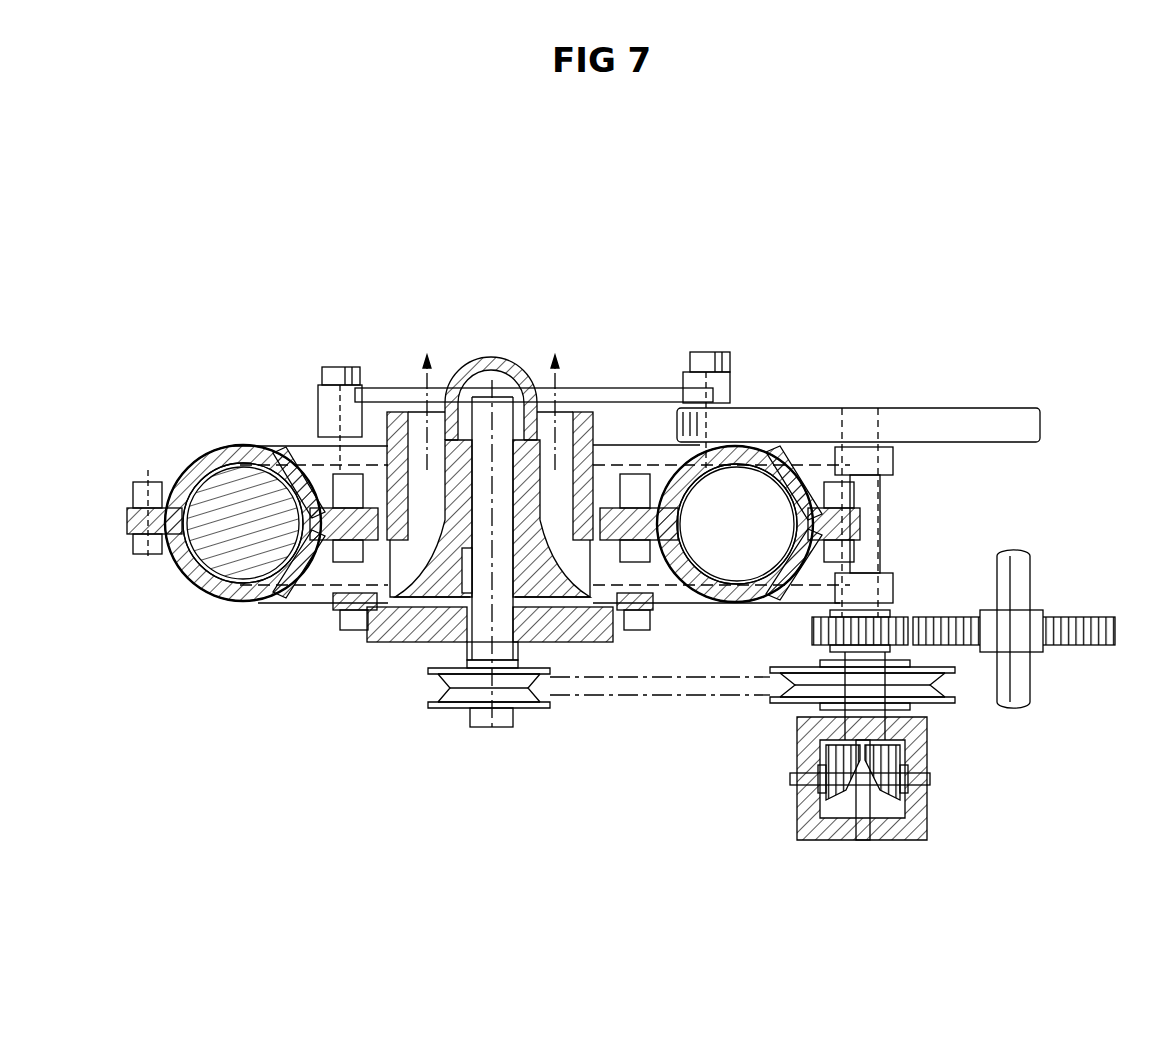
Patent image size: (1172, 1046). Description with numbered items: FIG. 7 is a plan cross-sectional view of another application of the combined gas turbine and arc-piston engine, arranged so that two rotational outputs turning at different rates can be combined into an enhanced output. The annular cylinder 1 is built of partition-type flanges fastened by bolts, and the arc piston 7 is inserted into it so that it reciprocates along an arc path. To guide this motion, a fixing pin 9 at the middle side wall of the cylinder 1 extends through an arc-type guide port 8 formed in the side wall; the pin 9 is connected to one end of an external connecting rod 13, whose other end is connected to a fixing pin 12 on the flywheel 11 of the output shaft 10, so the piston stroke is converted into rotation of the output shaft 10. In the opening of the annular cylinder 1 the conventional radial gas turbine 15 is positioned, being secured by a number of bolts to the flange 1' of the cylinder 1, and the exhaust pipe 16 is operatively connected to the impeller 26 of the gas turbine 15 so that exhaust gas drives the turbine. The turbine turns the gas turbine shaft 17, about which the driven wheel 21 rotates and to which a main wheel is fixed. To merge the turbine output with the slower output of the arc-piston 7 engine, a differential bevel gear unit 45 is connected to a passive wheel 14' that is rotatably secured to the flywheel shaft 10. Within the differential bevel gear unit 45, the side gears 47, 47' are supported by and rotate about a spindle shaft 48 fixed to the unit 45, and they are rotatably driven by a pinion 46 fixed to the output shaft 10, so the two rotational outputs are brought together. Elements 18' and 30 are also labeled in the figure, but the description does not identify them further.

The annular cylinder 1 is at (502, 368).
The flange 1' is at (140, 358).
The arc piston 7 is at (190, 590).
The arc-type guide port 8 is at (290, 380).
The fixing pin 9 is at (341, 365).
The output shaft 10 is at (876, 523).
The flywheel 11 is at (931, 408).
The fixing pin 12 is at (705, 352).
The external connecting rod 13 is at (402, 380).
The passive wheel 14' is at (797, 764).
The radial gas turbine 15 is at (578, 400).
The exhaust pipe 16 is at (315, 577).
The gas turbine shaft 17 is at (492, 615).
The gear 18' is at (975, 605).
The driven wheel 21 is at (533, 704).
The impeller 26 is at (418, 582).
The shaft 30 is at (1062, 645).
The differential bevel gear unit 45 is at (927, 745).
The pinion 46 is at (866, 840).
The side gear 47 is at (910, 840).
The side gear 47' is at (831, 840).
The spindle shaft 48 is at (793, 777).